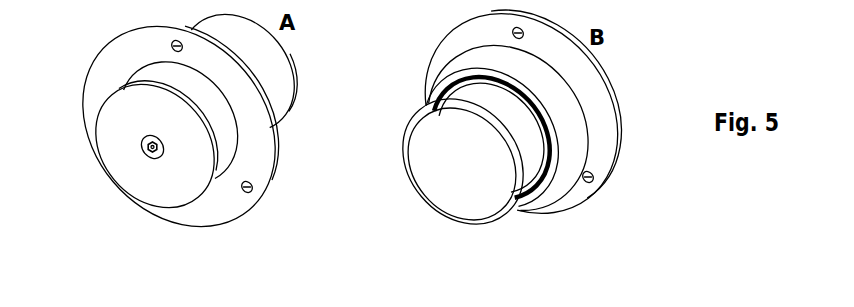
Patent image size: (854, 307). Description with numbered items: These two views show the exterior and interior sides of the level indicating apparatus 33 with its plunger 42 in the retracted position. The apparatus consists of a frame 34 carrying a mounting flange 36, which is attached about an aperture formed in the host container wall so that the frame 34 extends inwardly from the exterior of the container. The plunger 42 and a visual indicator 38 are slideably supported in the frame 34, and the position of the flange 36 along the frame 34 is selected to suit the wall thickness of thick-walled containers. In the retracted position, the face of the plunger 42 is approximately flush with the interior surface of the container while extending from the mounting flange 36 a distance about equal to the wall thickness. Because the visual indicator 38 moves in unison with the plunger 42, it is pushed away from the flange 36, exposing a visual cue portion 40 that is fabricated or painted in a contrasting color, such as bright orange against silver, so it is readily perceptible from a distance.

In FIG. 5B, the level indicating apparatus 33 is at (389, 24).
In FIG. 5B, the frame 34 is at (456, 67).
In FIG. 5A, the mounting flange 36 is at (220, 221).
In FIG. 5B, the mounting flange 36 is at (574, 208).
In FIG. 5A, the visual indicator 38 is at (184, 203).
In FIG. 5A, the visual cue portion 40 is at (222, 135).
In FIG. 5B, the plunger 42 is at (432, 203).